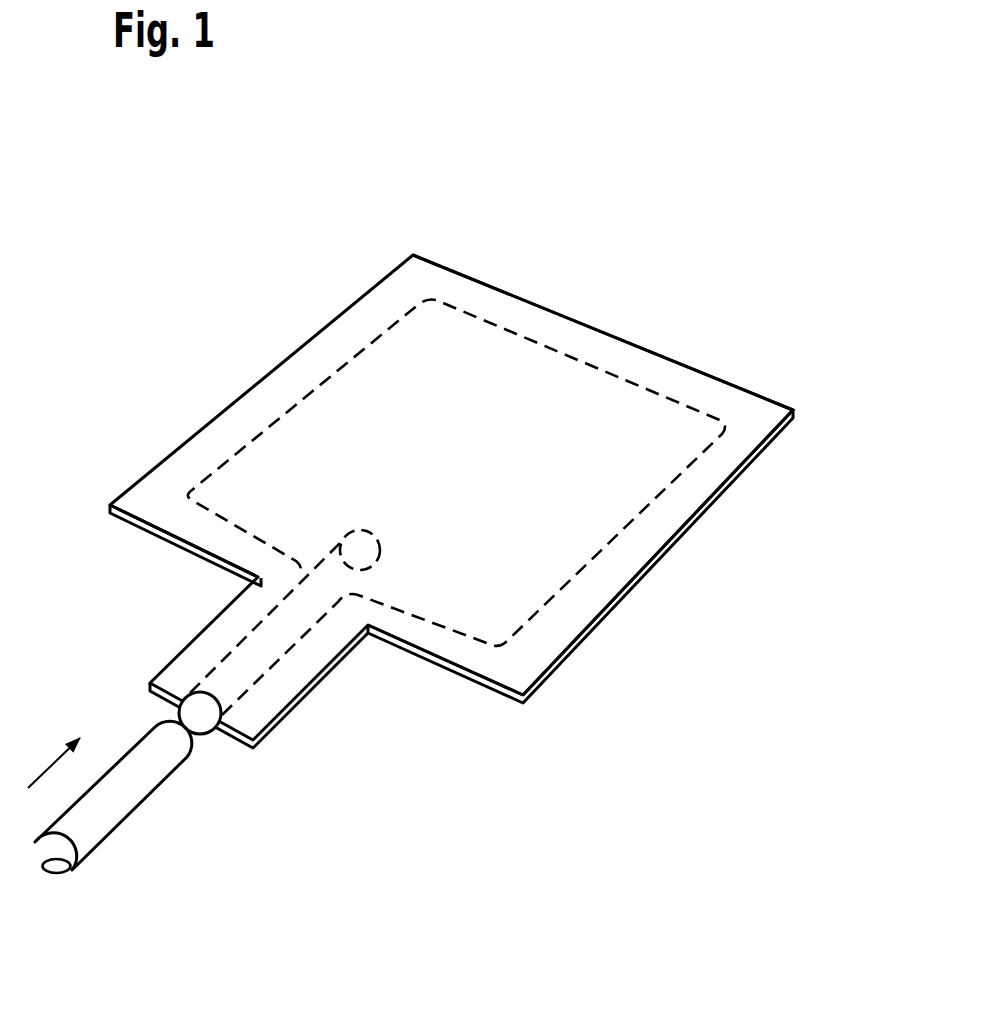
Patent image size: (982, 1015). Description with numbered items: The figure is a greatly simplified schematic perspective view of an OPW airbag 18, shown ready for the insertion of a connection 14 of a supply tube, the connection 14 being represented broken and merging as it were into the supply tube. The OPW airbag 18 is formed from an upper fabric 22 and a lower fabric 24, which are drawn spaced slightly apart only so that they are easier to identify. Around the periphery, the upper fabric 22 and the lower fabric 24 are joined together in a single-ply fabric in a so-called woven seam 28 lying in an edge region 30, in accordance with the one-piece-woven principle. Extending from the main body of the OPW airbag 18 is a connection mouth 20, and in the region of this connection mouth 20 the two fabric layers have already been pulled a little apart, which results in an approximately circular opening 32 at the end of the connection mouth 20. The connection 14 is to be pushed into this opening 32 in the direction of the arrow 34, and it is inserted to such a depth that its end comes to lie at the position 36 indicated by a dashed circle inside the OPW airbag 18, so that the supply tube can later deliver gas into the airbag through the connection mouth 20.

The connection 14 is at (113, 810).
The OPW airbag 18 is at (448, 507).
The connection mouth 20 is at (273, 702).
The upper fabric 22 is at (748, 410).
The lower fabric 24 is at (743, 477).
The woven seam 28 is at (542, 653).
The edge region 30 is at (528, 290).
The opening 32 is at (203, 720).
The arrow 34 is at (50, 761).
The position 36 is at (342, 522).